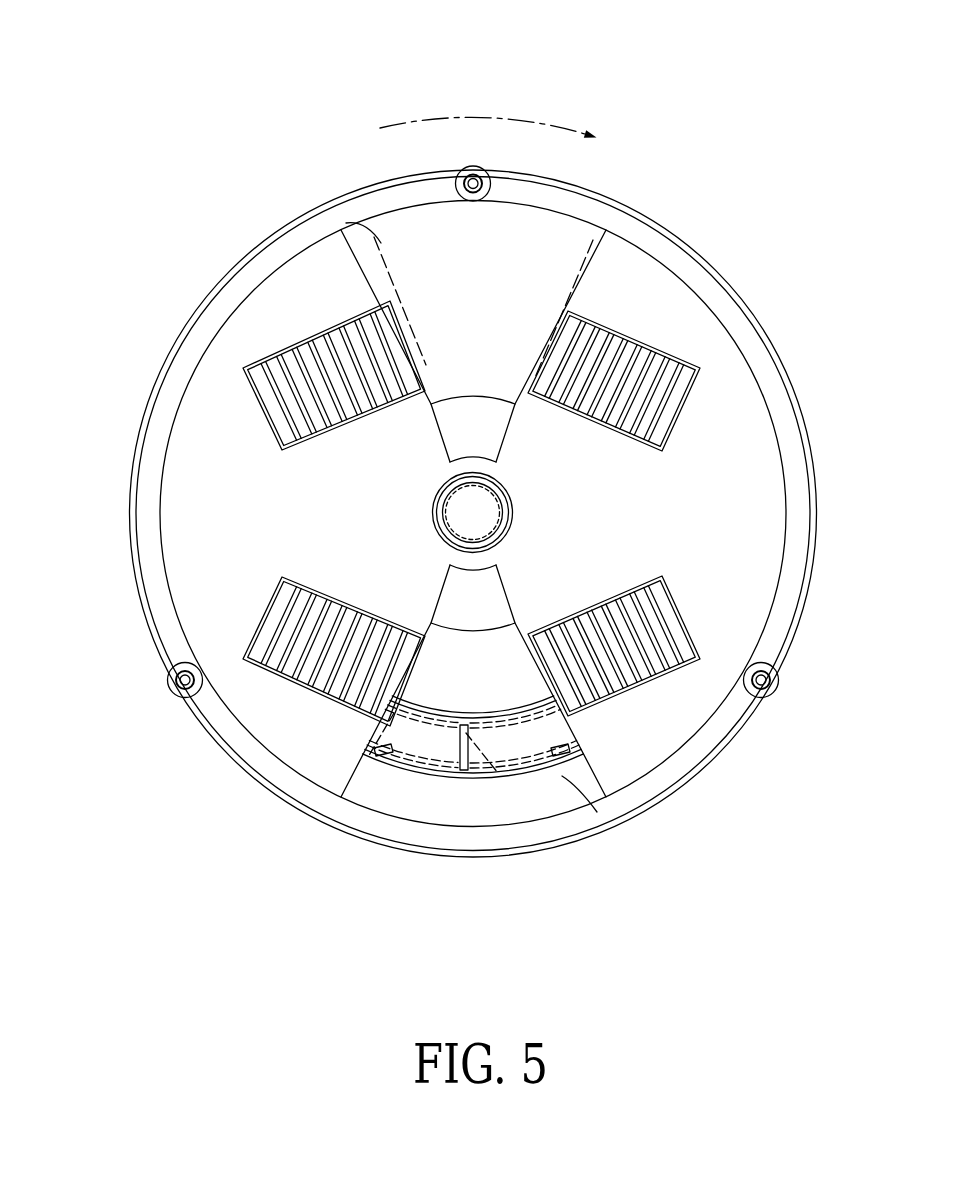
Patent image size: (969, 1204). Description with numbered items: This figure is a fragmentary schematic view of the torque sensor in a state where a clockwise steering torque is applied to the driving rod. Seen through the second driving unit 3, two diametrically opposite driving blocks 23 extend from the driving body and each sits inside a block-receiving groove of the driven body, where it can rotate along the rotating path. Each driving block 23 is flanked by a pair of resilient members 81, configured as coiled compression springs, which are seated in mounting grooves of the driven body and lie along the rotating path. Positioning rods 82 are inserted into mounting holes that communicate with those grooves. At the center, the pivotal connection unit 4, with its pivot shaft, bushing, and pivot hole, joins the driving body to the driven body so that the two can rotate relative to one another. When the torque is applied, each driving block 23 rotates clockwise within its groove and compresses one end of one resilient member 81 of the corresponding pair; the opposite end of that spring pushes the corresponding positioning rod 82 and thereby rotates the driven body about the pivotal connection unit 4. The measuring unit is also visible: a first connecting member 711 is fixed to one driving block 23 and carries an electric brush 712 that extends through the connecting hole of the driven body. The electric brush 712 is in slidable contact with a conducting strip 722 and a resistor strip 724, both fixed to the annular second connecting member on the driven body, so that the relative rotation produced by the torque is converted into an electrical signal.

The second driving unit 3 is at (728, 438).
The pivotal connection unit 4 is at (500, 511).
The driving block 23 is at (341, 228).
The resilient member 81 is at (635, 335).
The positioning rod 82 is at (696, 365).
The first connecting member 711 is at (451, 776).
The electric brush 712 is at (497, 775).
The conducting strip 722 is at (395, 762).
The resistor strip 724 is at (368, 758).